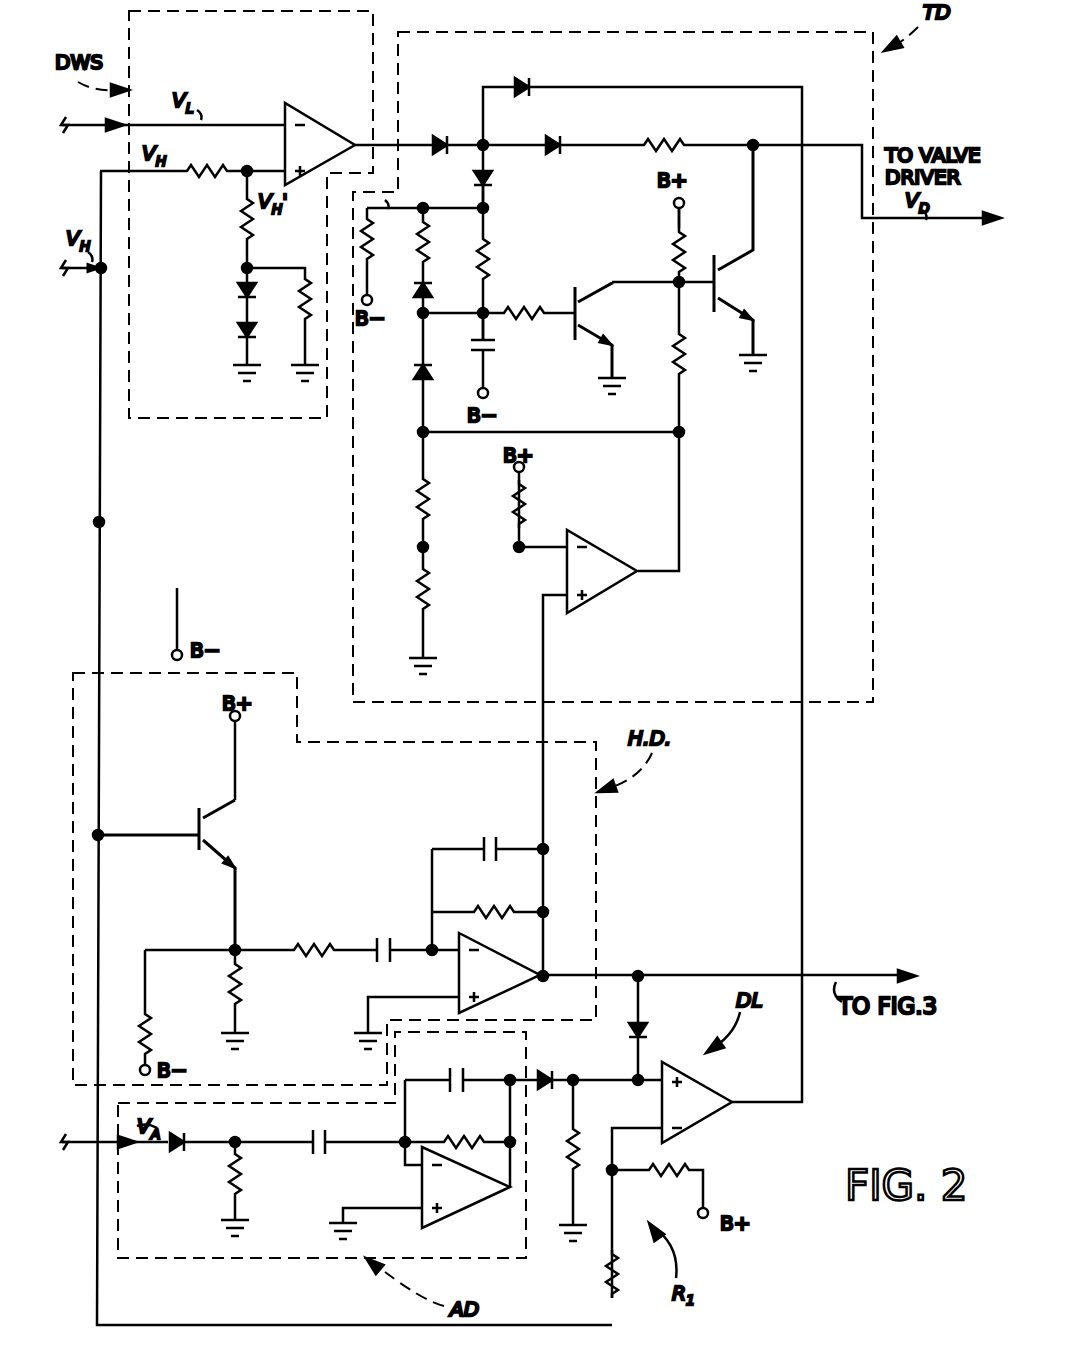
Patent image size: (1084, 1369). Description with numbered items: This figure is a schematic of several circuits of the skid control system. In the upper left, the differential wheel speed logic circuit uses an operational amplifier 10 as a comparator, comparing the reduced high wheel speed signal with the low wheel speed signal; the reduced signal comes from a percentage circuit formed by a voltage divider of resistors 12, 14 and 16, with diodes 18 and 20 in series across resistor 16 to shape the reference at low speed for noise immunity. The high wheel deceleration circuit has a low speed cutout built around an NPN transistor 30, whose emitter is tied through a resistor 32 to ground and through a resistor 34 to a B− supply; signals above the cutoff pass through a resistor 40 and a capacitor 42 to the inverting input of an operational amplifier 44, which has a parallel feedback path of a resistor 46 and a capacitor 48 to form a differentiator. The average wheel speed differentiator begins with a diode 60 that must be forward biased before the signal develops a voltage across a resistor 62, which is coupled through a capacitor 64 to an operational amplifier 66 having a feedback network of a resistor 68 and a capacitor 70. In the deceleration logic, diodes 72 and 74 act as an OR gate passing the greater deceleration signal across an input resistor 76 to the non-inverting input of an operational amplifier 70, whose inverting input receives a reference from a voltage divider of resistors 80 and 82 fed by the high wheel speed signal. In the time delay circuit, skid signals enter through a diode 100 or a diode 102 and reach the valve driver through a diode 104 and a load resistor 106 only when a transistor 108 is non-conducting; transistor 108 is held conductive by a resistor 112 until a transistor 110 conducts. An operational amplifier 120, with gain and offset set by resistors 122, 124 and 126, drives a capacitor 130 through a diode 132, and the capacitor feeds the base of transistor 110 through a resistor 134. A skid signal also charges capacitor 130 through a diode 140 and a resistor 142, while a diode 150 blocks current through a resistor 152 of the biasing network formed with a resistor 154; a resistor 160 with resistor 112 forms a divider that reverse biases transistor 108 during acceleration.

The operational amplifier 10 is at (324, 124).
The resistor 12 is at (205, 165).
The resistor 14 is at (243, 222).
The resistor 16 is at (300, 305).
The diode 18 is at (236, 294).
The diode 20 is at (239, 344).
The NPN transistor 30 is at (214, 838).
The resistor 32 is at (241, 978).
The resistor 34 is at (150, 1028).
The resistor 40 is at (312, 944).
The capacitor 42 is at (388, 936).
The operational amplifier 44 is at (462, 980).
The resistor 46 is at (481, 910).
The capacitor 48 is at (484, 840).
The diode 60 is at (184, 1151).
The resistor 62 is at (241, 1170).
The capacitor 64 is at (330, 1136).
The operational amplifier 66 is at (421, 1185).
The resistor 68 is at (463, 1140).
The capacitor / operational amplifier 70 is at (466, 1075).
The diode 72 is at (652, 1028).
The diode 74 is at (556, 1068).
The input resistor 76 is at (580, 1135).
The resistor 80 is at (606, 1283).
The resistor 82 is at (667, 1174).
The diode 100 is at (441, 134).
The diode 102 is at (510, 83).
The diode 104 is at (559, 138).
The resistor 106 is at (660, 142).
The NPN transistor 108 is at (726, 283).
The transistor 110 is at (590, 313).
The resistor 112 is at (676, 250).
The operational amplifier 120 is at (630, 540).
The resistor 122 is at (429, 586).
The resistor 124 is at (431, 491).
The resistor 126 is at (525, 500).
The capacitor 130 is at (496, 347).
The diode 132 is at (415, 362).
The resistor 134 is at (523, 311).
The diode 140 is at (496, 184).
The resistor 142 is at (489, 260).
The diode 150 is at (428, 290).
The resistor 152 is at (430, 250).
The resistor 154 is at (370, 238).
The resistor 160 is at (682, 357).